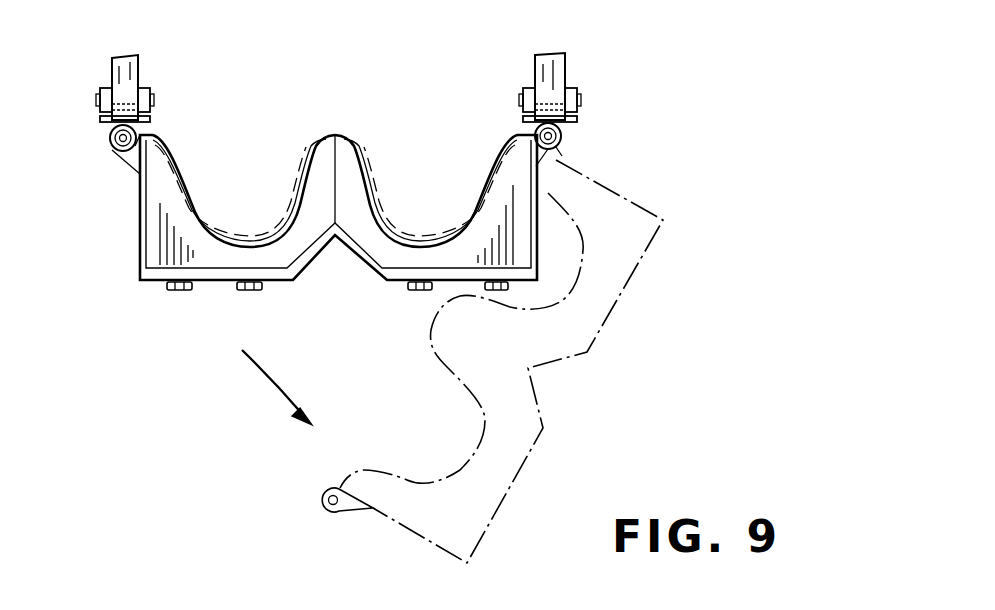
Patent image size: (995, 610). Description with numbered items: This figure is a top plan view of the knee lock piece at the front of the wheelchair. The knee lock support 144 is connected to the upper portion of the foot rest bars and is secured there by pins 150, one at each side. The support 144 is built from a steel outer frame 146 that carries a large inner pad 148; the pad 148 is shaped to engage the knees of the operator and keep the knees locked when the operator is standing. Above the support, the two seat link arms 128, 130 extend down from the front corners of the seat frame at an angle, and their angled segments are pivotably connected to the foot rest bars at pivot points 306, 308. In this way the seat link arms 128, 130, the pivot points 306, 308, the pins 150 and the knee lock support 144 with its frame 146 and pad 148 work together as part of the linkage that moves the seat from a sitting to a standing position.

The seat link arm 128 is at (540, 70).
The seat link arm 130 is at (113, 63).
The knee lock support 144 is at (167, 323).
The steel outer frame 146 is at (138, 238).
The inner pad 148 is at (208, 245).
The pins 150 is at (121, 152).
The pivot point 306 is at (579, 99).
The pivot point 308 is at (153, 100).